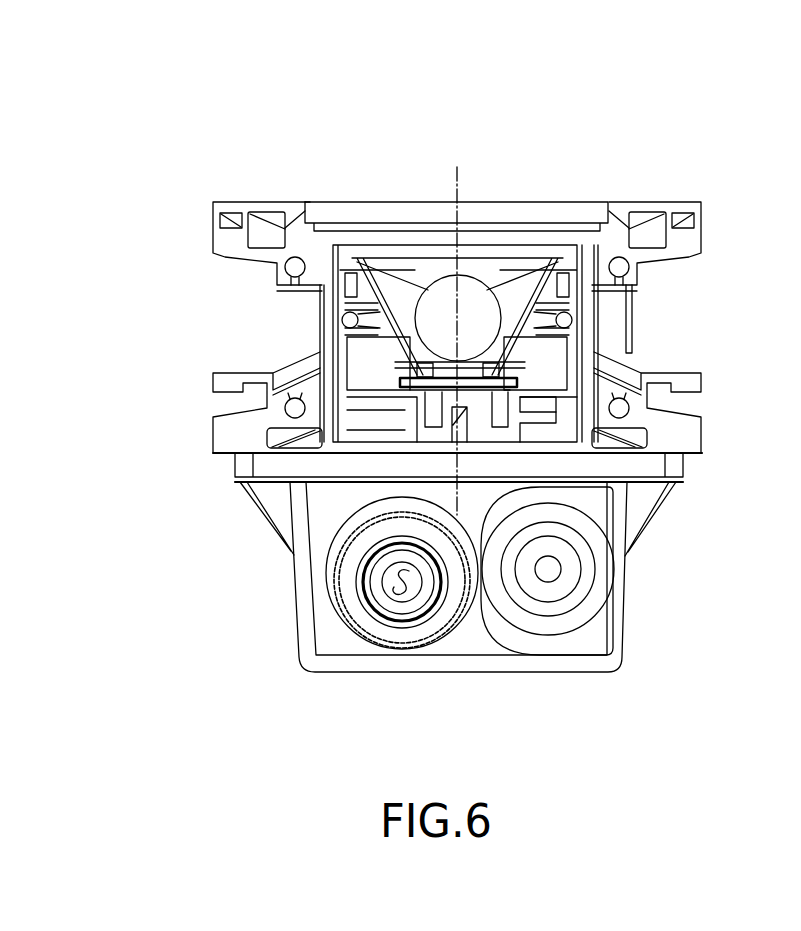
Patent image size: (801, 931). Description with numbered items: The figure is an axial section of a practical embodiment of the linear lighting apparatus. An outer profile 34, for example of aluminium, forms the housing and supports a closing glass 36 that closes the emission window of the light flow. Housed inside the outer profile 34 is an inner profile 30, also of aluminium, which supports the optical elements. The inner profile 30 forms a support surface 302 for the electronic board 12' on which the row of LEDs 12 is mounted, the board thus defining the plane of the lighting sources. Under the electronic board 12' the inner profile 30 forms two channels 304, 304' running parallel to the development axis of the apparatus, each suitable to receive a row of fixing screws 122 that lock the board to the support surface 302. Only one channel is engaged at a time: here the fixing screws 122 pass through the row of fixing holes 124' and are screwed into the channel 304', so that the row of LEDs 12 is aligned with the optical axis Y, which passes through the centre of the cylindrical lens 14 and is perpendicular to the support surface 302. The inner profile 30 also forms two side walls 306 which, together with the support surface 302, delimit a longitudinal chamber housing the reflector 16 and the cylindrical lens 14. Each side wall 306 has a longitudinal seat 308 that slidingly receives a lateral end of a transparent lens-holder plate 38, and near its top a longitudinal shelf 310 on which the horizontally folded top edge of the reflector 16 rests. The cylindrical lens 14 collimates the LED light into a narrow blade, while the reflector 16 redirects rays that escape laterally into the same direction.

The lighting sources 12 is at (431, 529).
The electronic board 12' is at (230, 381).
The cylindrical lens 14 is at (470, 292).
The reflector 16 is at (393, 248).
The inner profile 30 is at (345, 316).
The outer profile 34 is at (688, 202).
The closing glass 36 is at (362, 201).
The lens-holder plate 38 is at (550, 268).
The fixing screws 122 is at (508, 400).
The fixing holes 124' is at (677, 319).
The support surface 302 is at (543, 380).
The channel 304 is at (365, 560).
The channel 304' is at (477, 573).
The side walls 306 is at (596, 260).
The longitudinal seat 308 is at (320, 328).
The longitudinal shelf 310 is at (299, 204).
The optical axis Y is at (457, 190).